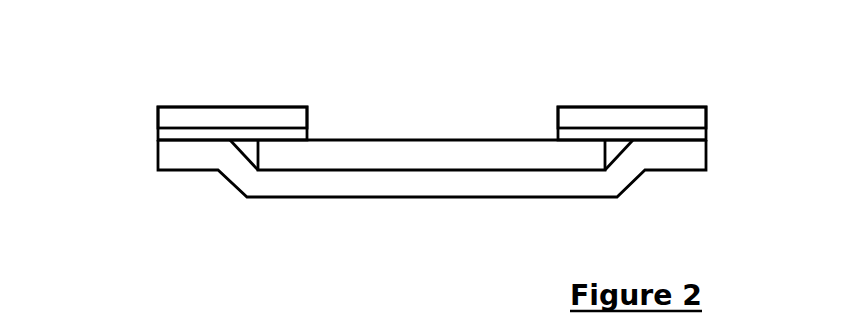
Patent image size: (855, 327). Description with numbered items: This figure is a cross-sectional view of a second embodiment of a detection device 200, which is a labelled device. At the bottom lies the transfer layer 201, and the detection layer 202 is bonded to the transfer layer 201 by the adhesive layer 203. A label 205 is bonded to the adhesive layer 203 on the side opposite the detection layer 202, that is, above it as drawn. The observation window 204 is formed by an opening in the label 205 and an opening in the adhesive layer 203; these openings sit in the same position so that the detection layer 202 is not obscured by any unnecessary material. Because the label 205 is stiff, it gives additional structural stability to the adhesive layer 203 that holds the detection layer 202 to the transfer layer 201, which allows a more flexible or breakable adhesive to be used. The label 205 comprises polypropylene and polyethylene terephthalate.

The detection device 200 is at (170, 78).
The transfer layer 201 is at (168, 158).
The detection layer 202 is at (270, 160).
The adhesive layer 203 is at (182, 137).
The observation window 204 is at (429, 120).
The label 205 is at (275, 120).